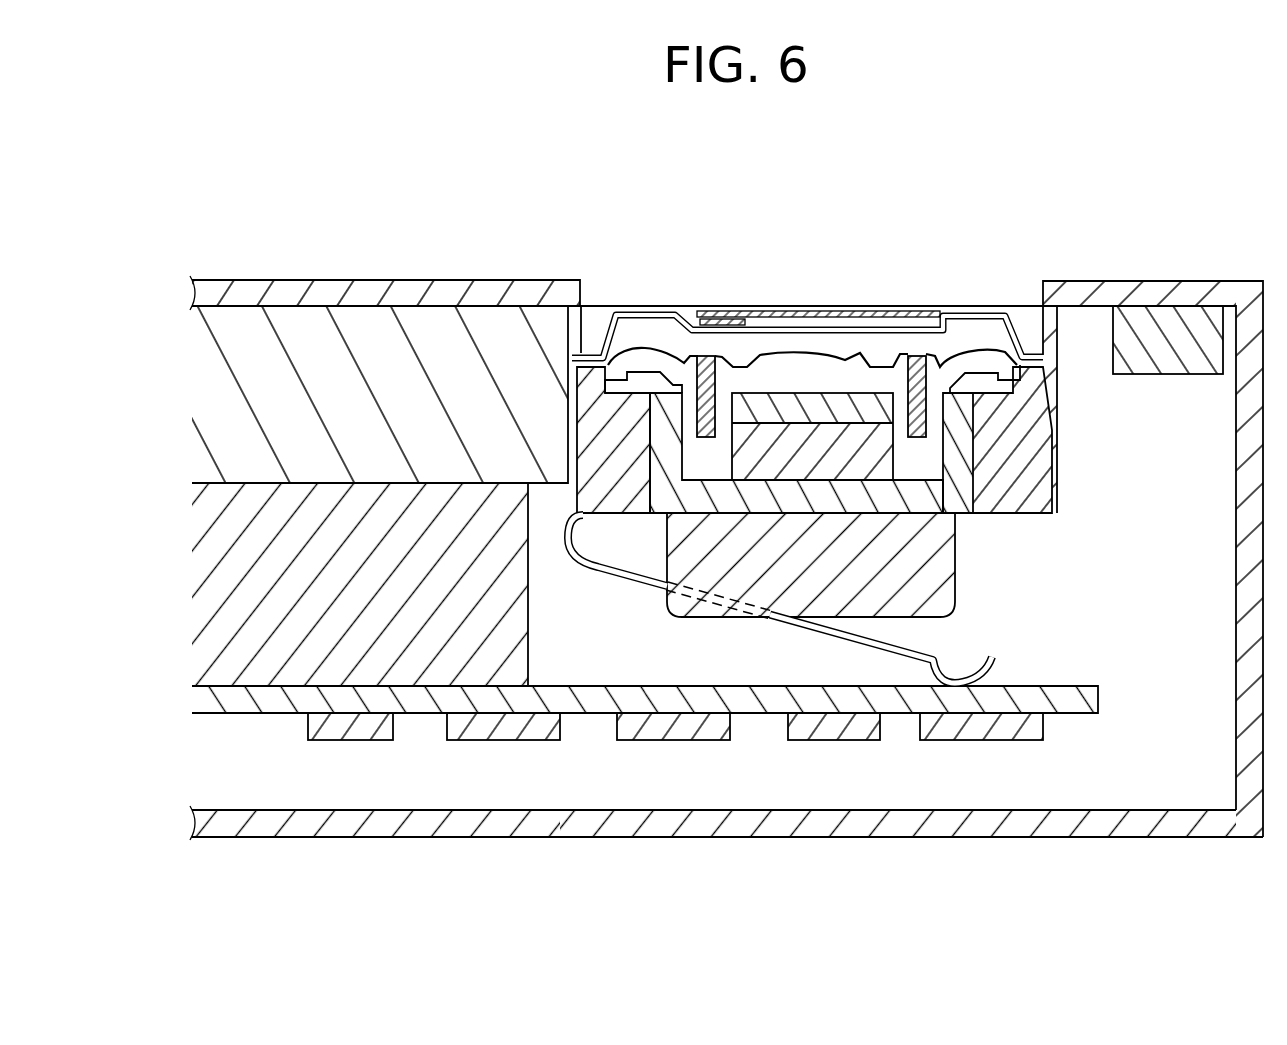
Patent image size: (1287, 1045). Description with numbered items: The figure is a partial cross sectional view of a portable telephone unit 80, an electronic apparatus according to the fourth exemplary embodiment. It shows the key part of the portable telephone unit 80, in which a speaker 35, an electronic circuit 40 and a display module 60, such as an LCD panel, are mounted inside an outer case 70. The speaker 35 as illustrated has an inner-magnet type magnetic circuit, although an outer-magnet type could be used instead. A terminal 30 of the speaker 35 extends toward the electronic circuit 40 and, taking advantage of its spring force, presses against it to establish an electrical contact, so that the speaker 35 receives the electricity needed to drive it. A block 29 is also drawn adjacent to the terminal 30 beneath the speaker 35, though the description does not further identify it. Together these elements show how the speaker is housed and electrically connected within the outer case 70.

The holder block 29 is at (920, 562).
The terminal 30 is at (630, 577).
The speaker 35 is at (823, 292).
The electronic circuit 40 is at (1065, 702).
The display module 60 is at (356, 330).
The outer case 70 is at (667, 823).
The portable telephone unit 80 is at (575, 270).